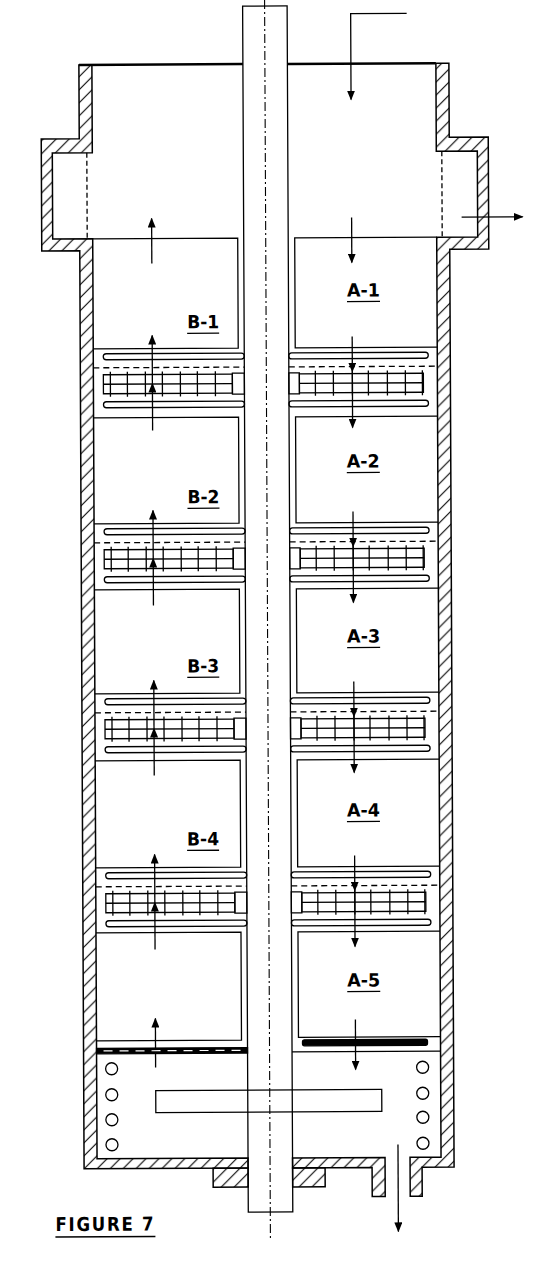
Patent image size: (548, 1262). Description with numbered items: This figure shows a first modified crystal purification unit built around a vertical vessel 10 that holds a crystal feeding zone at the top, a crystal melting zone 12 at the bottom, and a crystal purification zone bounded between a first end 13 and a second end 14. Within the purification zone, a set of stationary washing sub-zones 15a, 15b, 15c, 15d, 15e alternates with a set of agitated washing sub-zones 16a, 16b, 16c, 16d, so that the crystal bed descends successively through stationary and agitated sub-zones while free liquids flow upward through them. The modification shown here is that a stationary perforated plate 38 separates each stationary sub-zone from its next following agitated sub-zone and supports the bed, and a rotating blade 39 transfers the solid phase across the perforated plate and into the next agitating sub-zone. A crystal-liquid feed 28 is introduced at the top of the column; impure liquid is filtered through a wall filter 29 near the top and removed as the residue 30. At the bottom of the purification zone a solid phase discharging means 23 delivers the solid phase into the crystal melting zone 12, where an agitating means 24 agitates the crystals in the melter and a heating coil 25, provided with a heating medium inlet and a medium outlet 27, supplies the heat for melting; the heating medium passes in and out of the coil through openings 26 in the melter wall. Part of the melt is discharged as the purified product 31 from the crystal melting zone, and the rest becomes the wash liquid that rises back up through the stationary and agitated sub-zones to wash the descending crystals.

The vertical vessel 10 is at (81, 640).
The crystal melting zone 12 is at (341, 1145).
The first end 13 is at (216, 236).
The second end 14 is at (224, 1037).
The stationary washing sub-zone 15a is at (428, 300).
The stationary washing sub-zone 15b is at (427, 471).
The stationary washing sub-zone 15c is at (426, 637).
The stationary washing sub-zone 15d is at (426, 808).
The stationary washing sub-zone 15e is at (425, 980).
The agitated washing sub-zone 16a is at (430, 393).
The agitated washing sub-zone 16b is at (429, 567).
The agitated washing sub-zone 16c is at (428, 737).
The agitated washing sub-zone 16d is at (427, 906).
The solid phase discharging means 23 is at (96, 1049).
The agitating means 24 is at (188, 1112).
The heating coil 25 is at (103, 1119).
The inlet hole 26 is at (104, 1068).
The medium outlet 27 is at (425, 1144).
The crystal-liquid feed 28 is at (388, 51).
The wall filter 29 is at (441, 188).
The residue 30 is at (491, 203).
The purified product 31 is at (411, 1187).
The stationary perforated plate 38 is at (105, 367).
The rotating blade 39 is at (107, 359).